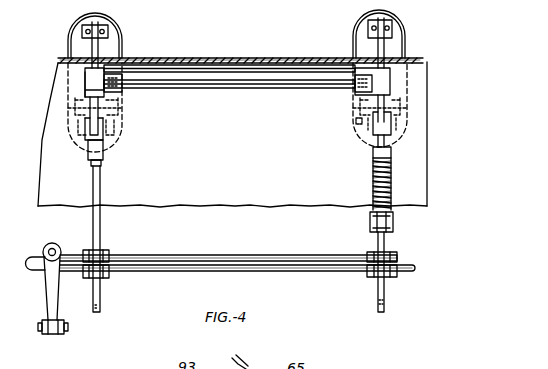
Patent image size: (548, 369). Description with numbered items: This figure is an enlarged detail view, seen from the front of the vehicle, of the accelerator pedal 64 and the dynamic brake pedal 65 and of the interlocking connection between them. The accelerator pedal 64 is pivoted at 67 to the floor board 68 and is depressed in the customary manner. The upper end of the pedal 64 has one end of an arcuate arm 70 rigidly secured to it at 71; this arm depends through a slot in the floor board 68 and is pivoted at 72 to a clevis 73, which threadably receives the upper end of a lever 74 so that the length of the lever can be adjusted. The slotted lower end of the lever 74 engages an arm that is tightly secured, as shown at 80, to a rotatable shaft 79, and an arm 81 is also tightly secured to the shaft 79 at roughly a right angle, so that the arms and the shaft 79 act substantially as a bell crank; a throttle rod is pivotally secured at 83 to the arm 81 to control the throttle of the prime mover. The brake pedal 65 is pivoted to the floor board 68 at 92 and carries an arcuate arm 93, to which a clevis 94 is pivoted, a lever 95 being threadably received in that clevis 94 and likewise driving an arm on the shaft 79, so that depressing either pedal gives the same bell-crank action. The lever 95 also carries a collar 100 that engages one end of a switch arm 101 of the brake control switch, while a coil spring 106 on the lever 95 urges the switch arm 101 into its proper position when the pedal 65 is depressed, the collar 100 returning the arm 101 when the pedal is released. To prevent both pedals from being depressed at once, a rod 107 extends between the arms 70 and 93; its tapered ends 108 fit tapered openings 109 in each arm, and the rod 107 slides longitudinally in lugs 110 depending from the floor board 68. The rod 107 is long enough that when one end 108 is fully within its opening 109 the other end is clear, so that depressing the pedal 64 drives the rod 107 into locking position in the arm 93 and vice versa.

The accelerator pedal 64 is at (112, 36).
The dynamic brake pedal 65 is at (353, 42).
The pivot 67 is at (115, 136).
The floor board 68 is at (235, 205).
The arcuate arm 70 is at (97, 52).
The securing point 71 is at (83, 26).
The pivot 72 is at (85, 128).
The clevis 73 is at (92, 152).
The lever 74 is at (97, 200).
The rotatable shaft 79 is at (118, 270).
The securing point 80 is at (100, 262).
The arm 81 is at (50, 290).
The pivot 83 is at (42, 331).
The pivot 92 is at (356, 124).
The arcuate arm 93 is at (382, 50).
The clevis 94 is at (378, 150).
The lever 95 is at (383, 245).
The collar 100 is at (370, 228).
The switch arm 101 is at (393, 224).
The coil spring 106 is at (388, 190).
The rod 107 is at (280, 90).
The tapered ends 108 is at (170, 62).
The tapered openings 109 is at (85, 88).
The lugs 110 is at (120, 92).